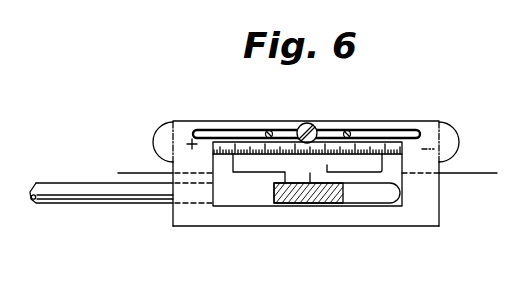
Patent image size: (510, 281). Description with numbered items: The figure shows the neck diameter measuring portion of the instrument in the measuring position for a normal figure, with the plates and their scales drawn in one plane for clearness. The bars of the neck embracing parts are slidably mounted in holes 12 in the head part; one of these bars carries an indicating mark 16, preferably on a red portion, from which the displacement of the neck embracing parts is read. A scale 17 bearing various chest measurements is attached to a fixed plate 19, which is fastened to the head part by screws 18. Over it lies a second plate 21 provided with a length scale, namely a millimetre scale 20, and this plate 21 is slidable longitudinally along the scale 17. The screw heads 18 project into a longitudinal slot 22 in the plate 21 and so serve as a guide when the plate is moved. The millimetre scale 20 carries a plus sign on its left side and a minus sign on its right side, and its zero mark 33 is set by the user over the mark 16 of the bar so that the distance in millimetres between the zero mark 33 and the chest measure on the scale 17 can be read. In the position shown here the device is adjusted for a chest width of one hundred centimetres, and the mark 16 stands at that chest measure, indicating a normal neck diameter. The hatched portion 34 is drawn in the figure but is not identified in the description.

The holes 12 is at (128, 197).
The indicating mark 16 is at (318, 187).
The scale 17 is at (288, 158).
The screws 18 is at (265, 131).
The plate 19 is at (373, 163).
The millimetre scale 20 is at (333, 148).
The plate 21 is at (184, 131).
The longitudinal slot 22 is at (406, 133).
The zero mark 33 is at (304, 147).
The hatched block 34 is at (341, 202).